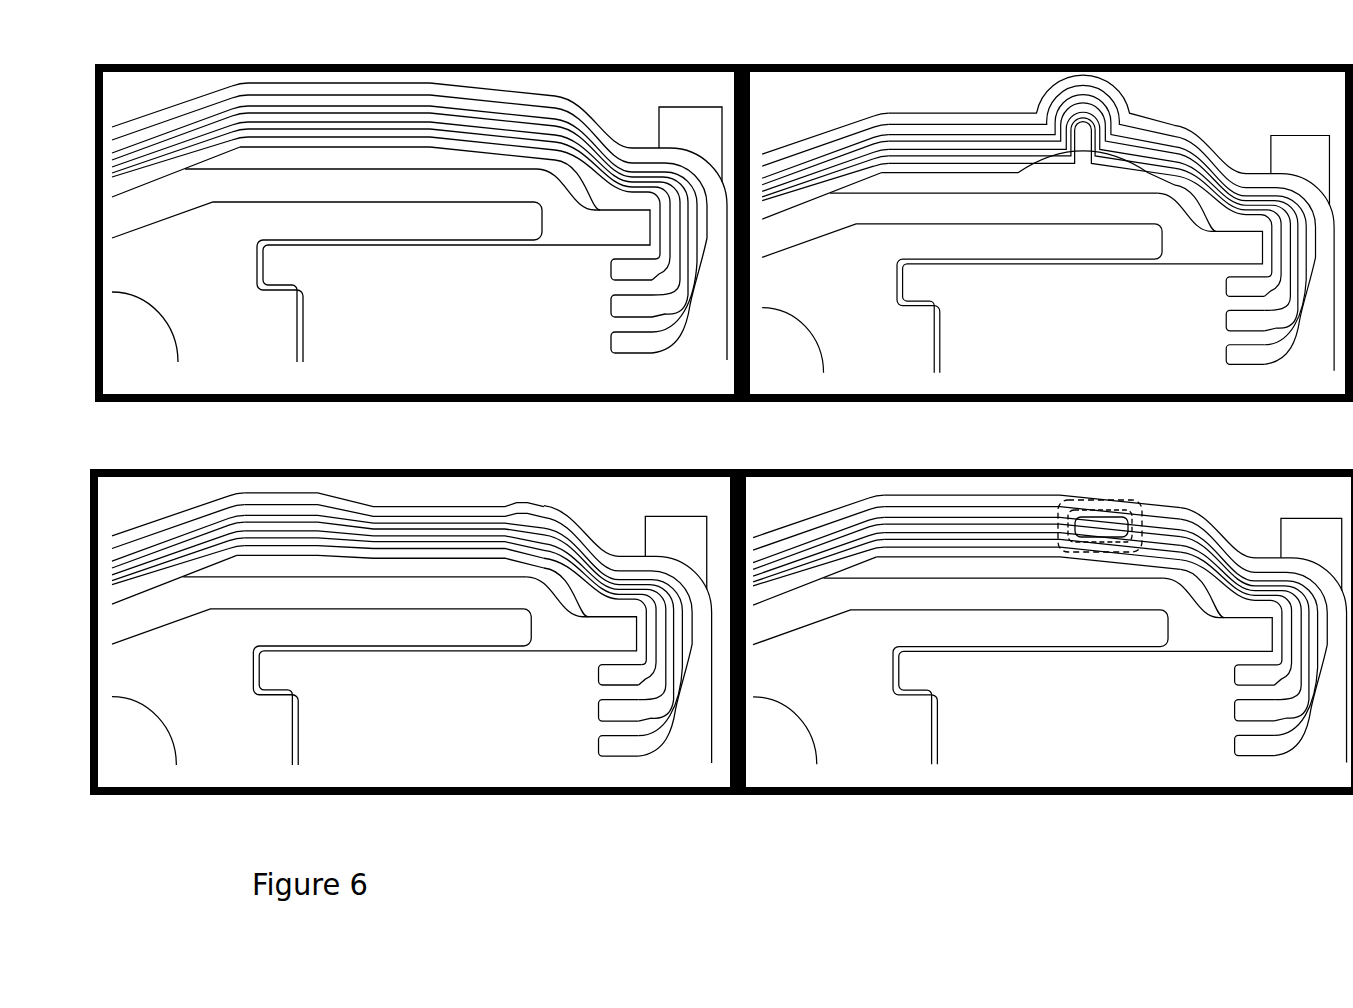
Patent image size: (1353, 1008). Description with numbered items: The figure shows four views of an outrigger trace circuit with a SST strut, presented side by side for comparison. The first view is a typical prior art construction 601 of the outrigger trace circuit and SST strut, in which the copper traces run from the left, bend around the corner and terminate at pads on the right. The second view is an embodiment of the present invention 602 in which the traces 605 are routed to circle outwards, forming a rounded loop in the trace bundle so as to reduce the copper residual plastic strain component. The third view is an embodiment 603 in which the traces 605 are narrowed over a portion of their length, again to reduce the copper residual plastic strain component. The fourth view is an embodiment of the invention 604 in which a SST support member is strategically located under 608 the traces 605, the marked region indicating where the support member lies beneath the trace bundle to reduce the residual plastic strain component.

The prior art construction 601 is at (418, 233).
The embodiment with traces routed to circle outwards 602 is at (1047, 233).
The embodiment with narrowed traces 603 is at (414, 632).
The embodiment with SST support member under the traces 604 is at (1047, 632).
The traces 605 is at (1213, 167).
The location of SST support member under the traces 608 is at (1100, 533).